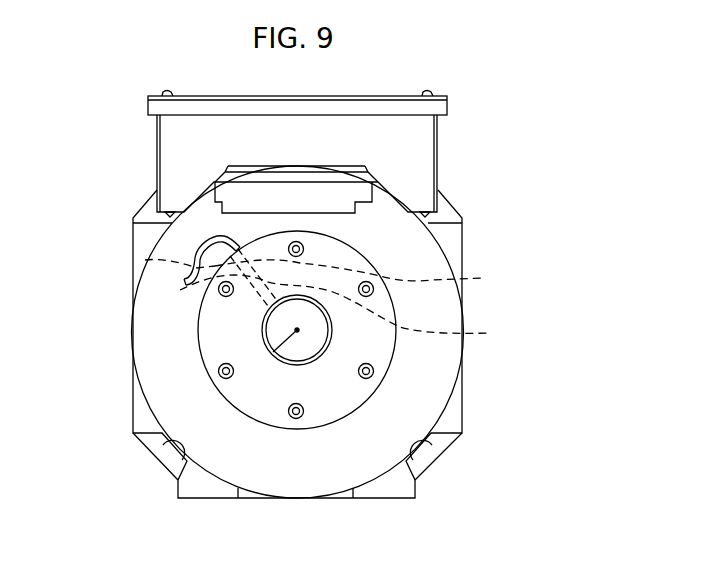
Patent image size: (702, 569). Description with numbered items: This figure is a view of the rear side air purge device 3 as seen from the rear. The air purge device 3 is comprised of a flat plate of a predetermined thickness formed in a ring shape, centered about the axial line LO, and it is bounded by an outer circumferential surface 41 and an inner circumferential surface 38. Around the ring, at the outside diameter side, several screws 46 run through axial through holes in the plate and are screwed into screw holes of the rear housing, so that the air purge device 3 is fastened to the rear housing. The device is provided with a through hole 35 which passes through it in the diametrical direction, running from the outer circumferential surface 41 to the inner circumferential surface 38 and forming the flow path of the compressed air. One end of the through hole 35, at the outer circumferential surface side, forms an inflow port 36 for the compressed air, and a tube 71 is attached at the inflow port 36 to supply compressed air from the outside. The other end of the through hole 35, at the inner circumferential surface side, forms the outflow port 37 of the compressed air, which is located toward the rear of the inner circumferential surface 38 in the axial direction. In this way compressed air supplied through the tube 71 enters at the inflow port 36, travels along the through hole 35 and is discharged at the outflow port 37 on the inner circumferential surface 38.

The air purge device 3 is at (318, 430).
The through hole 35 is at (365, 275).
The inflow port 36 is at (145, 260).
The outflow port 37 is at (351, 310).
The inner circumferential surface 38 is at (326, 338).
The outer circumferential surface 41 is at (374, 393).
The screws 46 is at (220, 366).
The tube 71 is at (198, 252).
The axial line LO is at (273, 352).